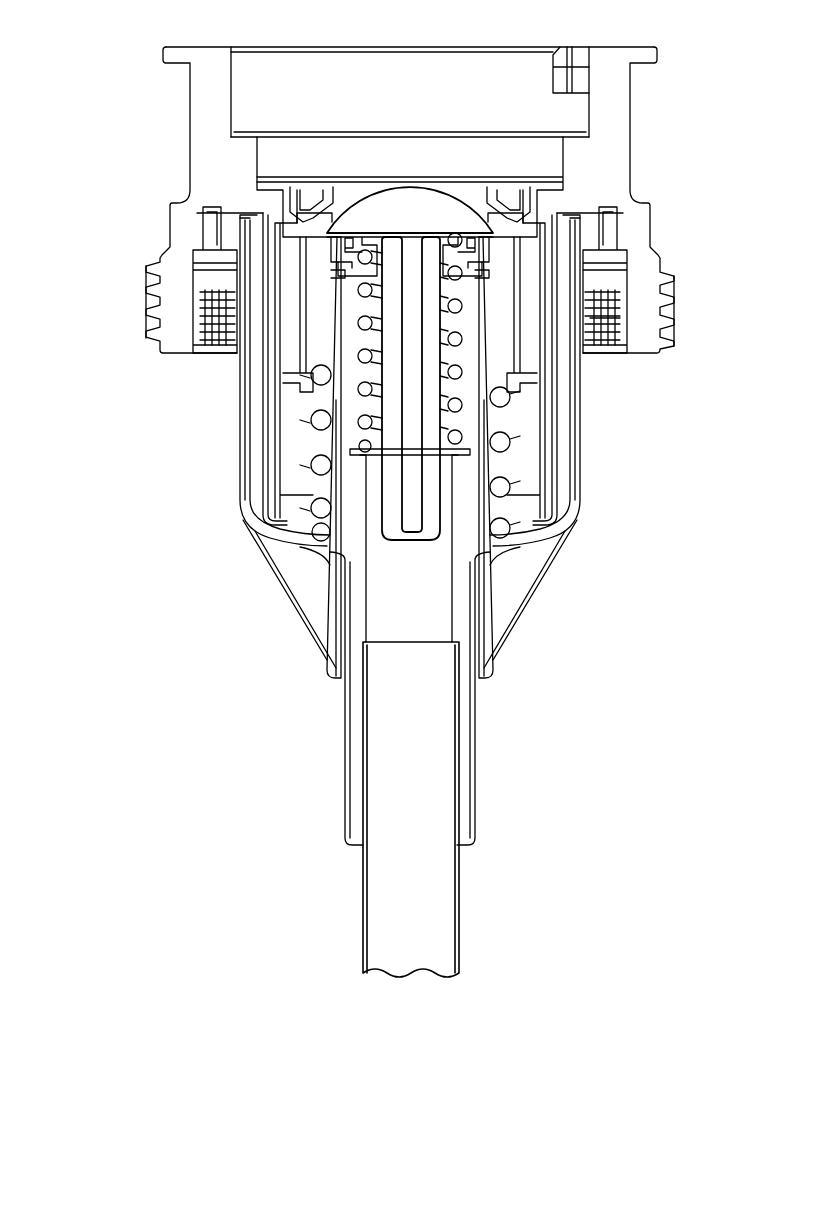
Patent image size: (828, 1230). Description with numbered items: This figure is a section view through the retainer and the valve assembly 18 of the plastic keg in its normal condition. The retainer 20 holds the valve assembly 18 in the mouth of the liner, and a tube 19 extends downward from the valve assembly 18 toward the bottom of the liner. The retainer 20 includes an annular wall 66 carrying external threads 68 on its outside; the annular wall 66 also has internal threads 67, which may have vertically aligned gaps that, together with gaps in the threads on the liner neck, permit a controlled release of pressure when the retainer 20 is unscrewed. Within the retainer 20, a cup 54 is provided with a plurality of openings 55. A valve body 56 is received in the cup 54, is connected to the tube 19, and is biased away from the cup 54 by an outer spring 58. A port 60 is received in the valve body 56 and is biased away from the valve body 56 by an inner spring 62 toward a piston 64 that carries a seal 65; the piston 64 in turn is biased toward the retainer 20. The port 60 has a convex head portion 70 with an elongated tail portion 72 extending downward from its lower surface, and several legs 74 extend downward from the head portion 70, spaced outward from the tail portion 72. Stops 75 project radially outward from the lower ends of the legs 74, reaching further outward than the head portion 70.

The valve assembly 18 is at (91, 112).
The tube 19 is at (360, 893).
The retainer 20 is at (190, 138).
The cup 54 is at (262, 538).
The openings 55 is at (272, 458).
The valve body 56 is at (445, 320).
The outer spring 58 is at (498, 487).
The port 60 is at (460, 215).
The inner spring 62 is at (345, 330).
The piston 64 is at (505, 195).
The seal 65 is at (517, 180).
The annular wall 66 is at (152, 344).
The internal threads 67 is at (207, 333).
The external threads 68 is at (145, 308).
The head portion 70 is at (380, 190).
The tail portion 72 is at (480, 275).
The legs 74 is at (330, 243).
The stops 75 is at (338, 275).